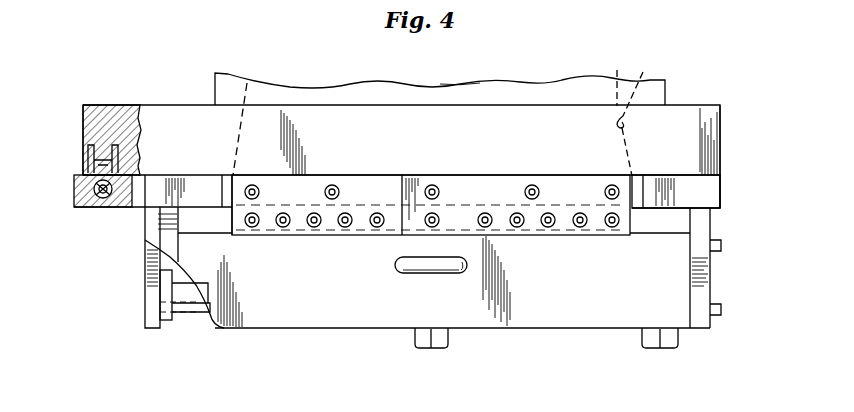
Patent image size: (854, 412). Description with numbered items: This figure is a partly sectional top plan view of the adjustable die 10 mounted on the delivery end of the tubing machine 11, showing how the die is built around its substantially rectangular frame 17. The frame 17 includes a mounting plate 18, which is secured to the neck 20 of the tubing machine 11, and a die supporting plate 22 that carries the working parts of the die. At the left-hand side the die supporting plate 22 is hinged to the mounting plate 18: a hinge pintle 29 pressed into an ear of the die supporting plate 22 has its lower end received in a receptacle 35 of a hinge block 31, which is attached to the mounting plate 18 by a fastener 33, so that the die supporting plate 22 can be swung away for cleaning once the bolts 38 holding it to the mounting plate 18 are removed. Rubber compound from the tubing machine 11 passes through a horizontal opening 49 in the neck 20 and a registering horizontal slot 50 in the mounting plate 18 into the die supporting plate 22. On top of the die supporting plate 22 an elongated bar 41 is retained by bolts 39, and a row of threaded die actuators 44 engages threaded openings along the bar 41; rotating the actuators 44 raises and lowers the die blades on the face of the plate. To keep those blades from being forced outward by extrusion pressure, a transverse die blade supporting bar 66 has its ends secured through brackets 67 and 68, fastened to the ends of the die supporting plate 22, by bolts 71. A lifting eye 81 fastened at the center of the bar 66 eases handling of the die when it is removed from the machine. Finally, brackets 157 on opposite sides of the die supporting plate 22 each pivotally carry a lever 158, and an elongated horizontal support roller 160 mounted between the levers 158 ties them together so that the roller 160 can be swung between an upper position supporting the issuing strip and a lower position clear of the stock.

The adjustable die 10 is at (534, 105).
The tubing machine 11 is at (355, 86).
The neck 20 is at (470, 82).
The rectangular frame 17 is at (730, 148).
The mounting plate 18 is at (693, 115).
The die supporting plate 22 is at (716, 194).
The hinge pintle 29 is at (105, 207).
The hinge block 31 is at (74, 190).
The fastener 33 is at (78, 158).
The receptacle 35 is at (90, 207).
The bolts 38 is at (659, 349).
The bolts 39 is at (254, 185).
The elongated bar 41 is at (378, 180).
The die actuators 44 is at (287, 224).
The horizontal opening 49 is at (428, 112).
The horizontal slot 50 is at (639, 113).
The die blade supporting bar 66 is at (260, 328).
The bracket 67 is at (146, 242).
The bracket 68 is at (706, 274).
The bolts 71 is at (723, 310).
The lifting eye 81 is at (431, 273).
The brackets 157 is at (150, 270).
The lever 158 is at (168, 289).
The support roller 160 is at (193, 313).